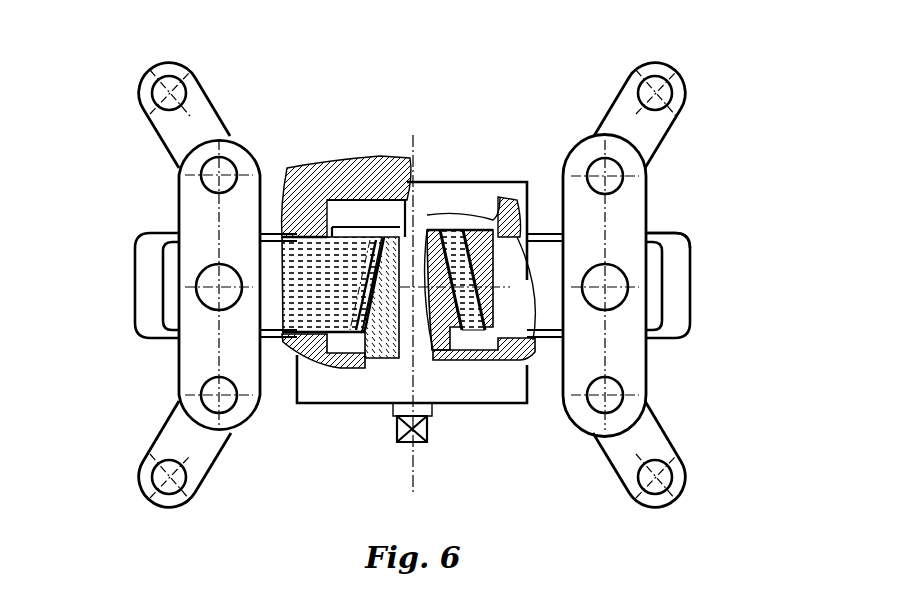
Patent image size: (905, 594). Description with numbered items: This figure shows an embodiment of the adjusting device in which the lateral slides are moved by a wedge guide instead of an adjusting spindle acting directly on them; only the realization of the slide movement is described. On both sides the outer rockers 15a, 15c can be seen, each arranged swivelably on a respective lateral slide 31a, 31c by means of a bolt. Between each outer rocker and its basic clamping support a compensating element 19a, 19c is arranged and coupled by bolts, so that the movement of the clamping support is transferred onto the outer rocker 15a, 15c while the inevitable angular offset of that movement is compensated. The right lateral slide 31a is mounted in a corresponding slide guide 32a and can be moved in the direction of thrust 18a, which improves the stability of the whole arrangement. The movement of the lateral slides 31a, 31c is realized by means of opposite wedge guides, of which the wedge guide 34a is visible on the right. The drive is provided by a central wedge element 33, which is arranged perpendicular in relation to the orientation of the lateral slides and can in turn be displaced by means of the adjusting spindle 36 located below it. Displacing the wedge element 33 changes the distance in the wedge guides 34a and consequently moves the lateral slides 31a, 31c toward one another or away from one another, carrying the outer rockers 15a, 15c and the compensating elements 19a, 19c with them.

The outer rocker 15c is at (202, 213).
The compensating element 19c is at (172, 431).
The lateral slide 31c is at (305, 273).
The wedge guide 34a is at (448, 224).
The wedge element 33 is at (433, 353).
The outer rocker 15a is at (620, 352).
The compensating element 19a is at (642, 135).
The direction of thrust 18a is at (677, 285).
The lateral slide 31a is at (653, 310).
The slide guide 32a is at (660, 225).
The adjusting spindle 36 is at (397, 412).